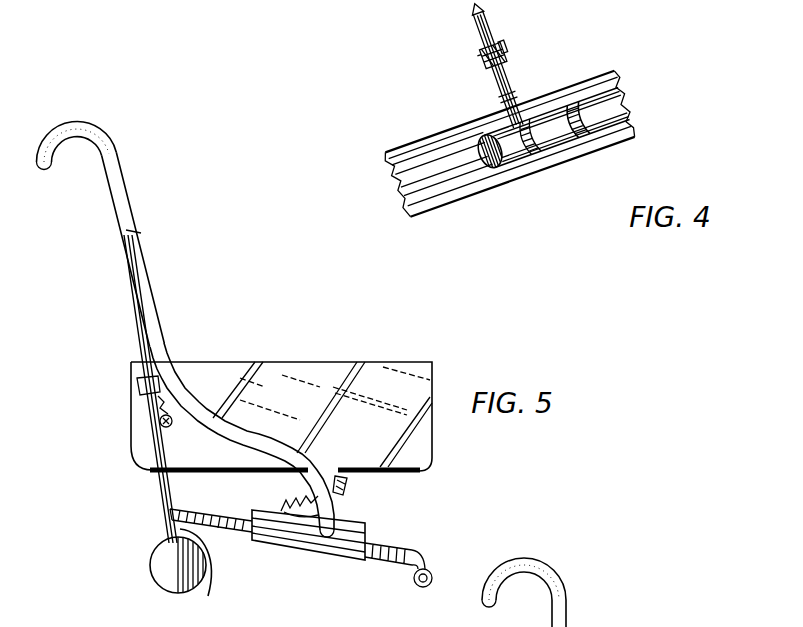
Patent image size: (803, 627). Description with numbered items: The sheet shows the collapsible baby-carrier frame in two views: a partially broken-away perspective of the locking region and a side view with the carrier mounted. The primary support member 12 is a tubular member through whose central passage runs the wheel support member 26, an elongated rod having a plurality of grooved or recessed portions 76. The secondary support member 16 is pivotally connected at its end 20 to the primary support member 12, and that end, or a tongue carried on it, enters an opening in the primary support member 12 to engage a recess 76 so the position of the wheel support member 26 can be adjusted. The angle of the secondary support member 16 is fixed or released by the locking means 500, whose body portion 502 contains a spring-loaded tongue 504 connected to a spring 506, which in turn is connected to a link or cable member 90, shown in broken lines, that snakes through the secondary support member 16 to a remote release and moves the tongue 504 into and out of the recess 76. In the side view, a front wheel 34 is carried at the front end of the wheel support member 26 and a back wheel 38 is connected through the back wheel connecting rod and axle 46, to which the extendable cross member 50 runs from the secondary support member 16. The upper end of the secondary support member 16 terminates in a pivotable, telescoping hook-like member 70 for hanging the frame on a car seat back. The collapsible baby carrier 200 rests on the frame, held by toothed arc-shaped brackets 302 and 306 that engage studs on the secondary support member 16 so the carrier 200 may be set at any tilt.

In FIG. 4, the primary support member 12 is at (433, 215).
In FIG. 5, the primary support member 12 is at (257, 533).
In FIG. 5, the secondary support member 16 is at (152, 313).
In FIG. 4, the end of secondary support member 20 is at (505, 82).
In FIG. 4, the wheel support member 26 is at (503, 165).
In FIG. 5, the wheel support member 26 is at (380, 556).
In FIG. 5, the front wheel 34 is at (418, 587).
In FIG. 5, the back wheel 38 is at (158, 552).
In FIG. 5, the back wheel connecting rod and axle 46 is at (208, 596).
In FIG. 5, the cross member 50 is at (140, 338).
In FIG. 5, the hook-like member 70 is at (70, 127).
In FIG. 4, the grooved or recessed portion 76 is at (528, 140).
In FIG. 4, the link or cable member 90 is at (477, 27).
In FIG. 5, the collapsible baby carrier 200 is at (395, 374).
In FIG. 5, the arc-shaped bracket 302 is at (137, 388).
In FIG. 5, the arc-shaped bracket 306 is at (343, 495).
In FIG. 4, the locking means 500 is at (425, 79).
In FIG. 4, the body portion 502 is at (490, 62).
In FIG. 4, the spring-loaded tongue 504 is at (505, 98).
In FIG. 4, the spring 506 is at (505, 45).